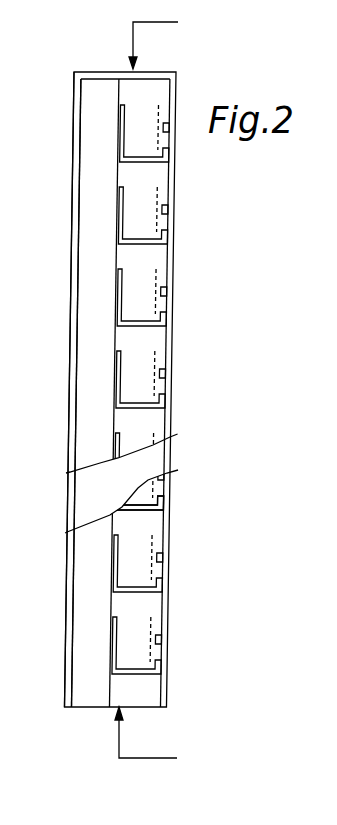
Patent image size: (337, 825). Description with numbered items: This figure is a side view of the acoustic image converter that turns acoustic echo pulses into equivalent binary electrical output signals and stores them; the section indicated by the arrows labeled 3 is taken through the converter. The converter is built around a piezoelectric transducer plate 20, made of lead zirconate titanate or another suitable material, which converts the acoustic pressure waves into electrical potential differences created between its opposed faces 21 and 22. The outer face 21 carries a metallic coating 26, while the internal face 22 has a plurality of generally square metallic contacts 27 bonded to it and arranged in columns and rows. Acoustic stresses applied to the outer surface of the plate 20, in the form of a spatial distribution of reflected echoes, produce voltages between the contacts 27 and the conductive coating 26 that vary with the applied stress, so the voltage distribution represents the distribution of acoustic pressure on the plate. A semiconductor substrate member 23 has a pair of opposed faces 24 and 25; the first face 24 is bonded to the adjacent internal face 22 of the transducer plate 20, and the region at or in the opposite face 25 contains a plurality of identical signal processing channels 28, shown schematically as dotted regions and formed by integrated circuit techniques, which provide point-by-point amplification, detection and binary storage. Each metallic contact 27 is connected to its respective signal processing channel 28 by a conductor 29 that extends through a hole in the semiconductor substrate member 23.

The piezoelectric transducer plate 20 is at (90, 688).
The outer face of transducer plate 21 is at (79, 345).
The internal face of transducer plate 22 is at (113, 415).
The semiconductor substrate member 23 is at (132, 622).
The first face of semiconductor substrate 24 is at (113, 524).
The second face of semiconductor substrate 25 is at (166, 518).
The metallic coating 26 is at (66, 674).
The metallic contacts 27 is at (120, 203).
The signal processing channels 28 is at (158, 193).
The conductor 29 is at (152, 410).
The section line 3- 3 is at (160, 390).